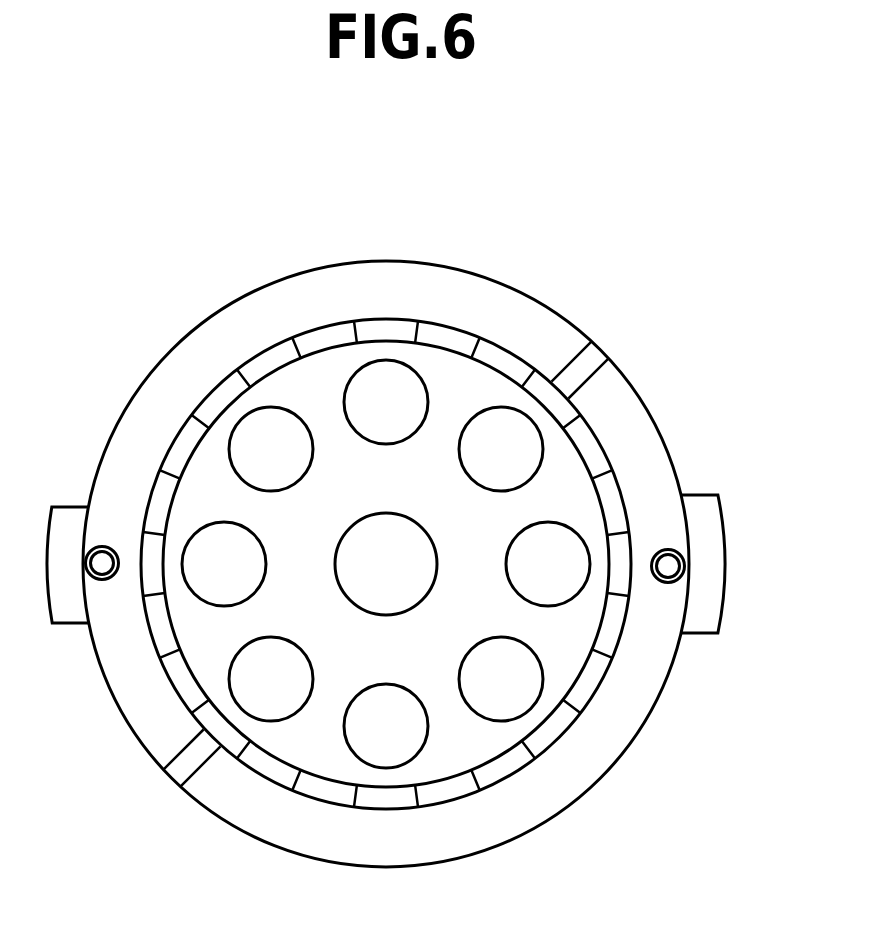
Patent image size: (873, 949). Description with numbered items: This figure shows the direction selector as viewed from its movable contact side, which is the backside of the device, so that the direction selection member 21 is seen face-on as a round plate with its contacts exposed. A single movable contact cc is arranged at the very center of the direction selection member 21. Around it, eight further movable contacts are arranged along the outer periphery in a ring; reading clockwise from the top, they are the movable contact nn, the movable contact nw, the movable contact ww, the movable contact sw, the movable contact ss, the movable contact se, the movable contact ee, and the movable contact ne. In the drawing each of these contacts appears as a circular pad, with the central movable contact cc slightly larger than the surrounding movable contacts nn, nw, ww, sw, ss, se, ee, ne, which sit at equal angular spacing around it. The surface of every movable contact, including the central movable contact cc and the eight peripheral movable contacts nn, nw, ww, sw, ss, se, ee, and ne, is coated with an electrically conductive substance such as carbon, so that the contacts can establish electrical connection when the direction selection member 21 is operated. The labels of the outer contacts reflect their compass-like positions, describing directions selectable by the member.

The direction selection member 21 is at (247, 327).
The movable contact nn is at (388, 384).
The movable contact cc is at (400, 540).
The movable contact ne is at (248, 438).
The movable contact nw is at (528, 452).
The movable contact ww is at (573, 548).
The movable contact ee is at (205, 580).
The movable contact se is at (267, 695).
The movable contact ss is at (383, 752).
The movable contact sw is at (503, 698).